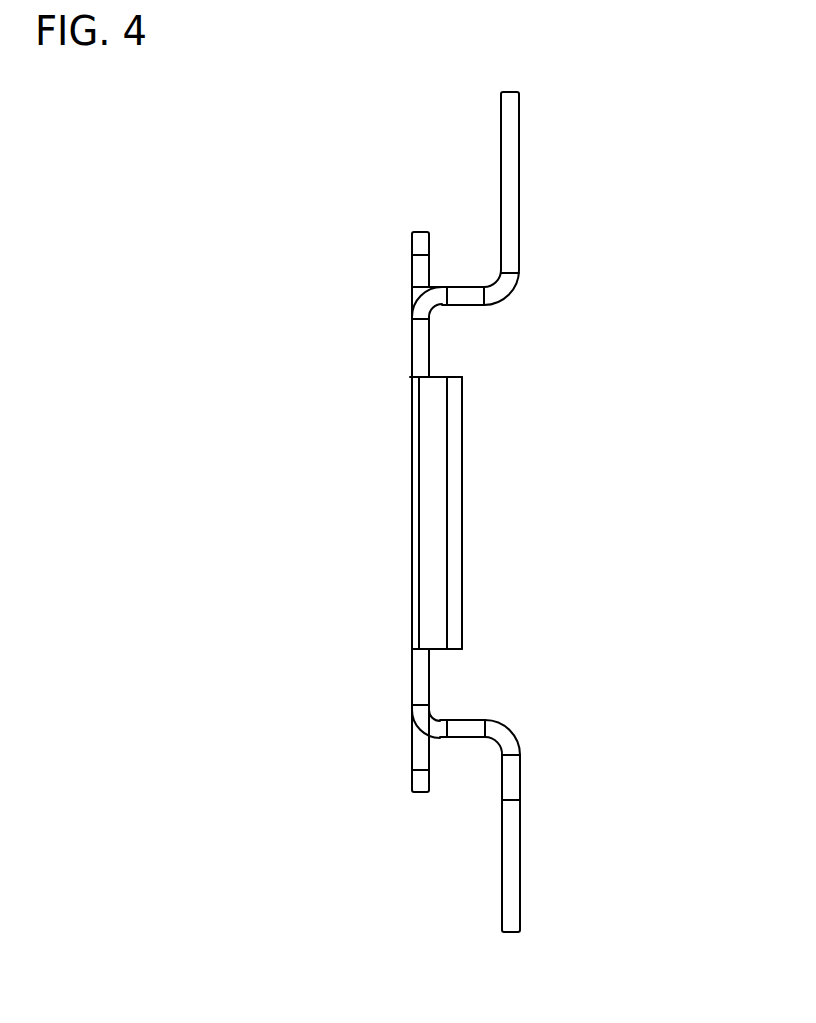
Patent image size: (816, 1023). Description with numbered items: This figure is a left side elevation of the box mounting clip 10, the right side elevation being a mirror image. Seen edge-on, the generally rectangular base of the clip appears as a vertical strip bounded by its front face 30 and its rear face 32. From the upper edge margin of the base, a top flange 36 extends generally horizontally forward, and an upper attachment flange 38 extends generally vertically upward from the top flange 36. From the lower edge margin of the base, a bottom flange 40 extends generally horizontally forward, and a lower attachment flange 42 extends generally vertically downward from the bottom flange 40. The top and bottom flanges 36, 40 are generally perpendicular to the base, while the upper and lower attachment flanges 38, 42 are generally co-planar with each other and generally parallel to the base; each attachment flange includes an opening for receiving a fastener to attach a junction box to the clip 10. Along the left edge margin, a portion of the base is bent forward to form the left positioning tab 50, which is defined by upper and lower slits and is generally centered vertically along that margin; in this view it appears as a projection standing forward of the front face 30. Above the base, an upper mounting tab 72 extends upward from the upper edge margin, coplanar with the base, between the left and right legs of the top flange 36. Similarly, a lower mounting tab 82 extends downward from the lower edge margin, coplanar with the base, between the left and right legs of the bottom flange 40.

The box mounting clip 10 is at (655, 68).
The front face 30 is at (429, 352).
The rear face 32 is at (412, 343).
The top flange 36 is at (470, 308).
The upper attachment flange 38 is at (500, 160).
The bottom flange 40 is at (472, 714).
The lower attachment flange 42 is at (520, 880).
The left positioning tab 50 is at (447, 518).
The upper mounting tab 72 is at (412, 272).
The lower mounting tab 82 is at (412, 752).